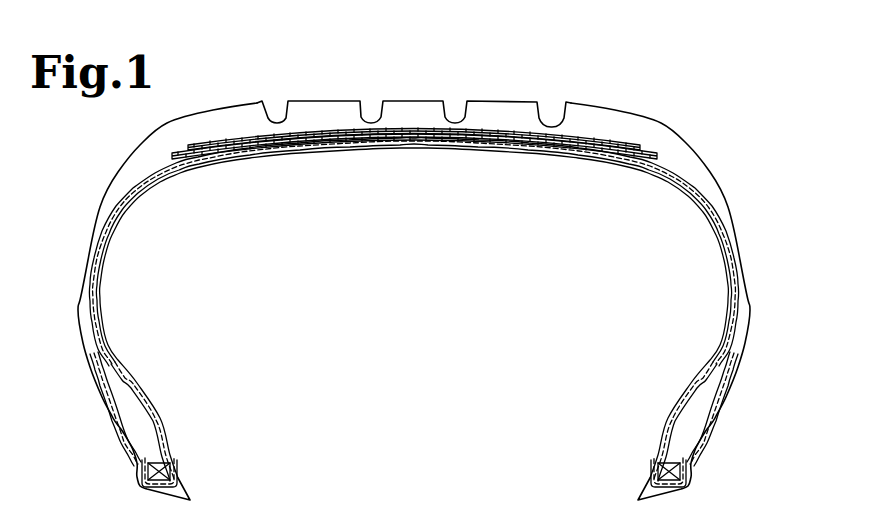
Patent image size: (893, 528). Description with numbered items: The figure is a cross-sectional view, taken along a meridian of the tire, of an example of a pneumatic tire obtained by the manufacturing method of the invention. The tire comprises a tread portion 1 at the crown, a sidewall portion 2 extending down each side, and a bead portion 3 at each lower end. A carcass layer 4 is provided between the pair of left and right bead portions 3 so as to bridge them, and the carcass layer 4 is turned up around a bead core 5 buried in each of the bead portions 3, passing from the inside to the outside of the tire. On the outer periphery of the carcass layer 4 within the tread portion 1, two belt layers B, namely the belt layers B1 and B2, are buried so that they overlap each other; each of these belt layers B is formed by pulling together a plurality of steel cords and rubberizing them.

The tread portion 1 is at (503, 98).
The sidewall portion 2 is at (81, 345).
The bead portion 3 is at (132, 472).
The carcass layer 4 is at (720, 236).
The bead core 5 is at (173, 473).
The belt layers B is at (472, 104).
The belt layer B1 is at (650, 157).
The belt layer B2 is at (622, 140).